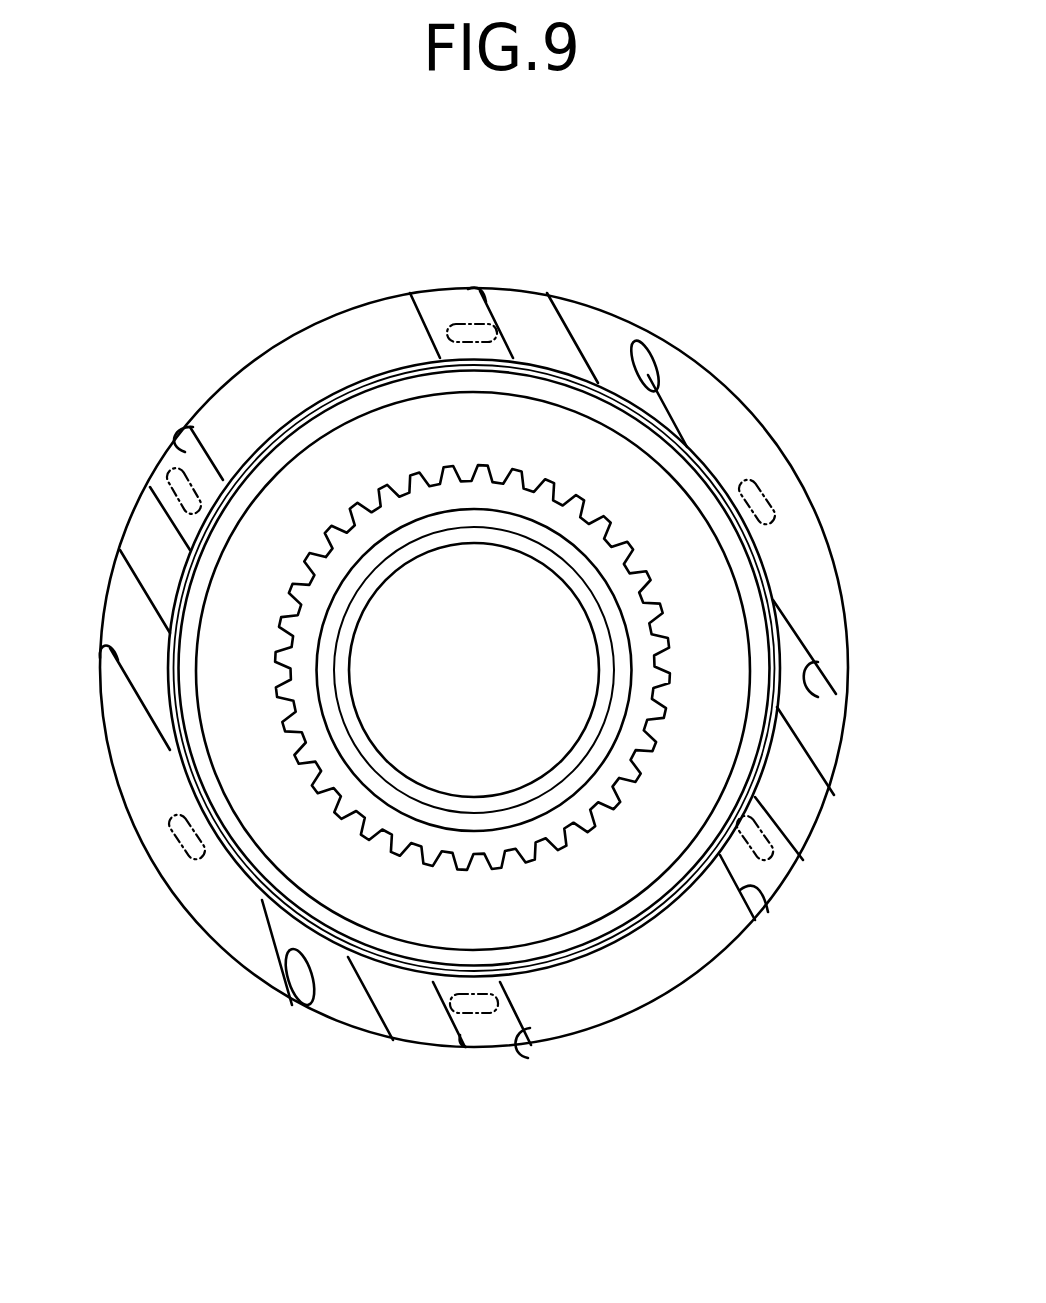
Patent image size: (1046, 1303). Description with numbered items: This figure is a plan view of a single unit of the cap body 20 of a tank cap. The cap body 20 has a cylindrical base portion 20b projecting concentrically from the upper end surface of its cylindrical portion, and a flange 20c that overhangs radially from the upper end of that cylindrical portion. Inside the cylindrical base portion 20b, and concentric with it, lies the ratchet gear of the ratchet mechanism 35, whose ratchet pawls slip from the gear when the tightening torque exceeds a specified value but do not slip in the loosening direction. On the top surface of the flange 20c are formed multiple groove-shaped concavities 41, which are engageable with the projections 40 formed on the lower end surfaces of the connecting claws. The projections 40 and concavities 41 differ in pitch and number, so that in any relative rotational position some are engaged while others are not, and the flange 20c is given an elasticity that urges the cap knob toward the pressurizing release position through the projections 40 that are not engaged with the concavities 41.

The cap body 20 is at (624, 306).
The cylindrical base portion 20b is at (320, 420).
The flange 20c is at (338, 338).
The ratchet mechanism 35 is at (468, 468).
The projections 40 is at (473, 325).
The groove-shaped concavities 41 is at (430, 312).